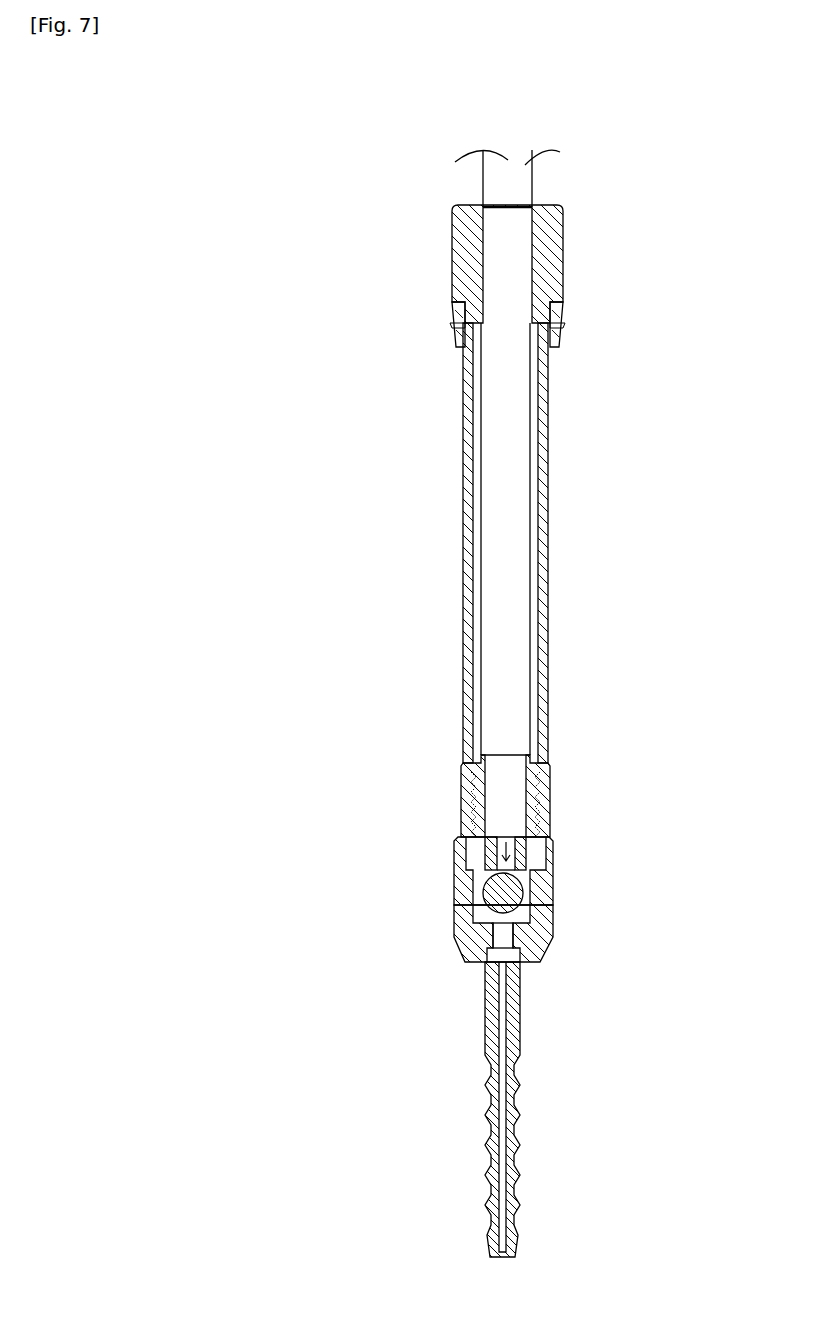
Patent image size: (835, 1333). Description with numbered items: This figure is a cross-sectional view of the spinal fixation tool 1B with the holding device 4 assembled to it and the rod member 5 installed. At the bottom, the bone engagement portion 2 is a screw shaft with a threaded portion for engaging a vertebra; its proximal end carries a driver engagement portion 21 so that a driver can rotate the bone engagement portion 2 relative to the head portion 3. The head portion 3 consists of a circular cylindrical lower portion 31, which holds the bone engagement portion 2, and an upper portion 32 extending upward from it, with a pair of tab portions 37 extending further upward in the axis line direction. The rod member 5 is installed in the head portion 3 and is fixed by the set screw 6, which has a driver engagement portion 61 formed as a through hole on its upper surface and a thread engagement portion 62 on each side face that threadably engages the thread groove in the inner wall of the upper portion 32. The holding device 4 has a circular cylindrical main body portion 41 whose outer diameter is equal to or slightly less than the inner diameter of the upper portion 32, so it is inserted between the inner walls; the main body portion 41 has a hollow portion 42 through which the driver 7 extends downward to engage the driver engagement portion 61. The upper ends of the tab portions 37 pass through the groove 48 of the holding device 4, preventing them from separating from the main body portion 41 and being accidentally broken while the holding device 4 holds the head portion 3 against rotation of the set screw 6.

The driver 7 is at (527, 185).
The spinal fixation tool holding device 4 is at (580, 289).
The groove 48 is at (465, 330).
The tab portions 37 is at (519, 613).
The main body portion 41 is at (539, 530).
The hollow portion 42 is at (506, 586).
The spinal fixation tool 1B is at (592, 700).
The driver engagement portion 61 is at (504, 832).
The head portion 3 is at (523, 889).
The upper portion 32 is at (574, 834).
The set screw 6 is at (575, 811).
The thread engagement portion 62 is at (470, 868).
The rod member 5 is at (525, 905).
The lower portion 31 is at (445, 962).
The driver engagement portion 21 is at (471, 986).
The bone engagement portion 2 is at (492, 1090).